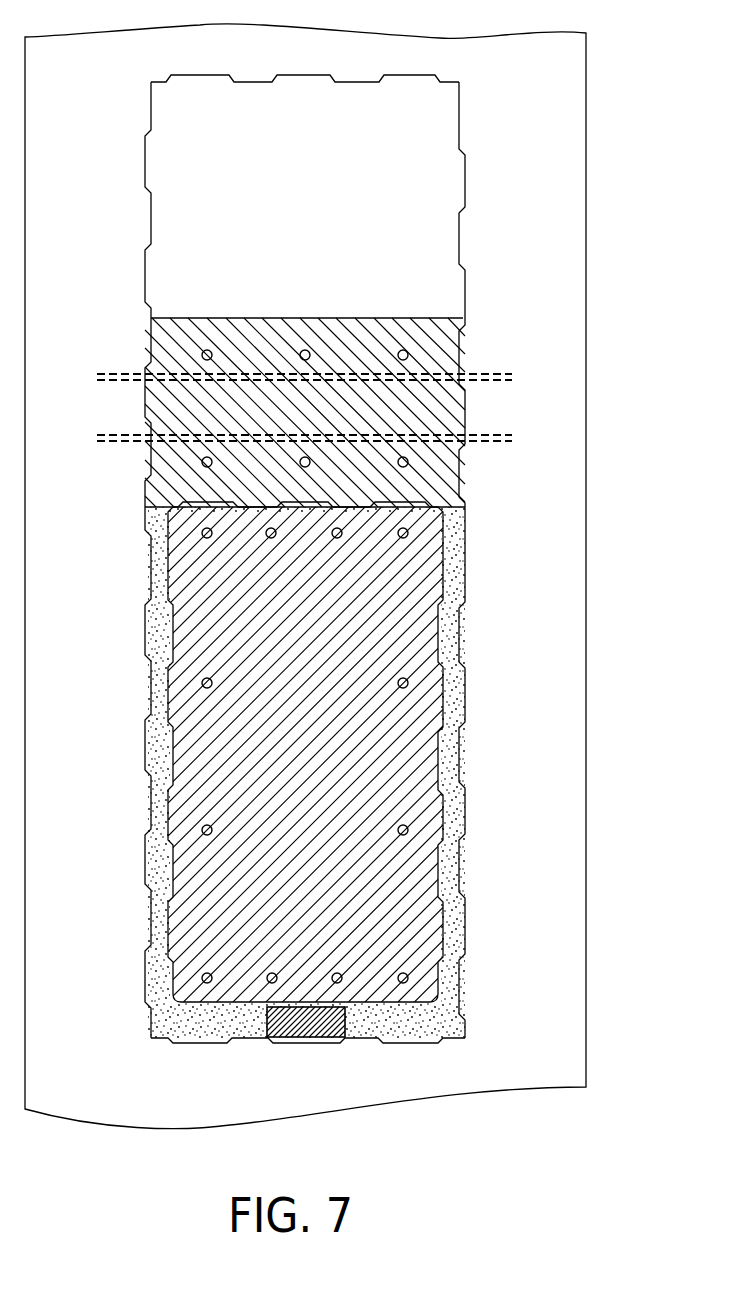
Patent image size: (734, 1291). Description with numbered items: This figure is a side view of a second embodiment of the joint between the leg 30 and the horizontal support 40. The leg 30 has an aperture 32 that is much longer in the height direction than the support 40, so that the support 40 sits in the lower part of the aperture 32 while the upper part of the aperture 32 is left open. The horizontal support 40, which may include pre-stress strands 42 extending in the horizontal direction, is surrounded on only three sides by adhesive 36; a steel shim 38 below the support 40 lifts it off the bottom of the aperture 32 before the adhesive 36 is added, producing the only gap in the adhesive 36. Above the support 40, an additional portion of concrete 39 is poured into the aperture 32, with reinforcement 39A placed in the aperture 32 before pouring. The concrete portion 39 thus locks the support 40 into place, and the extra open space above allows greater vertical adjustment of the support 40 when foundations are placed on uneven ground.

The leg 30 is at (558, 182).
The aperture 32 is at (377, 170).
The adhesive 36 is at (417, 1030).
The steel shim 38 is at (303, 1020).
The concrete portion 39 is at (437, 343).
The reinforcement 39A is at (489, 444).
The horizontal support 40 is at (193, 965).
The pre-stress strands 42 is at (203, 832).